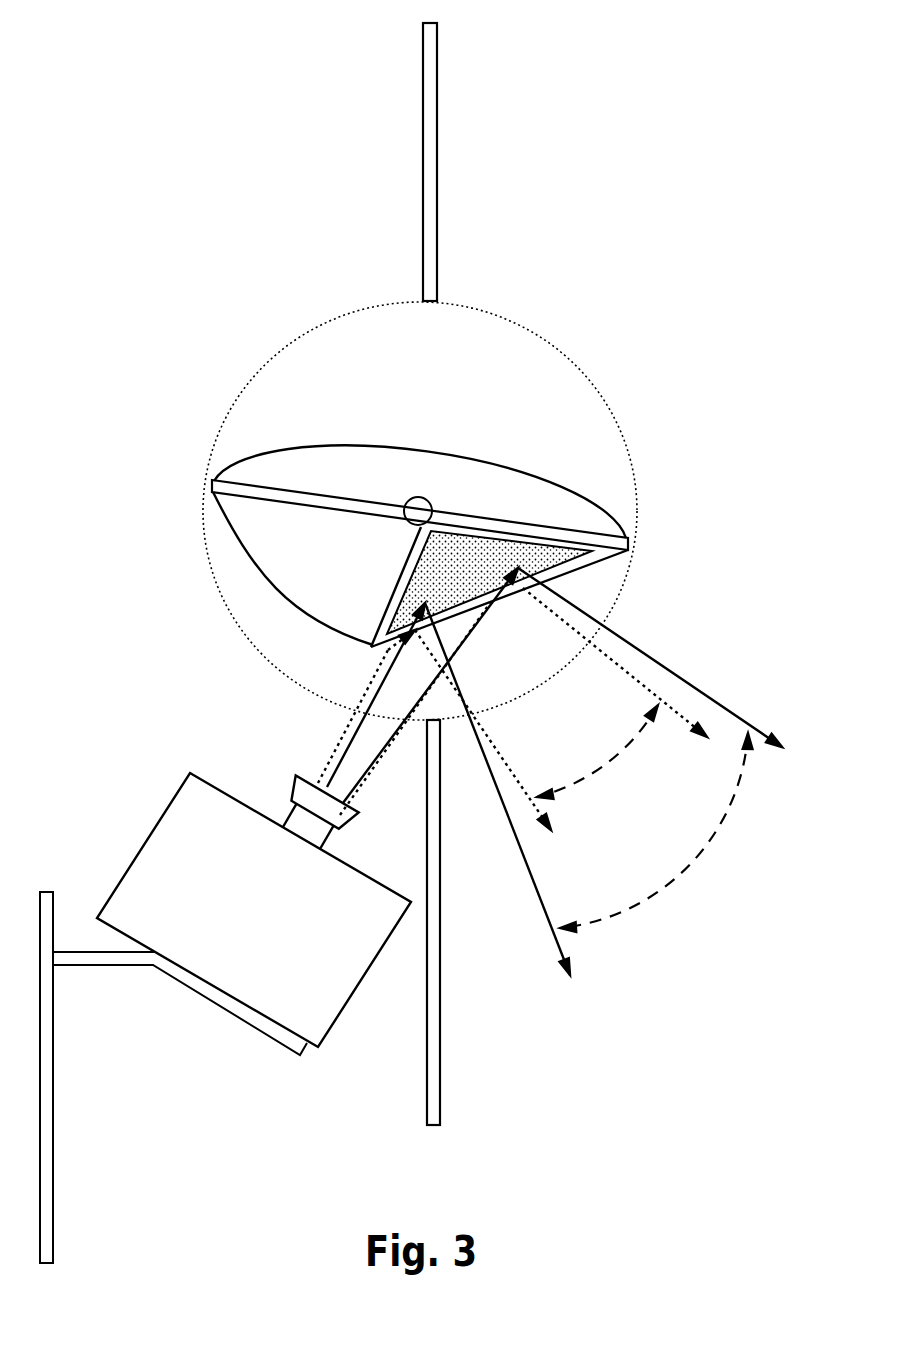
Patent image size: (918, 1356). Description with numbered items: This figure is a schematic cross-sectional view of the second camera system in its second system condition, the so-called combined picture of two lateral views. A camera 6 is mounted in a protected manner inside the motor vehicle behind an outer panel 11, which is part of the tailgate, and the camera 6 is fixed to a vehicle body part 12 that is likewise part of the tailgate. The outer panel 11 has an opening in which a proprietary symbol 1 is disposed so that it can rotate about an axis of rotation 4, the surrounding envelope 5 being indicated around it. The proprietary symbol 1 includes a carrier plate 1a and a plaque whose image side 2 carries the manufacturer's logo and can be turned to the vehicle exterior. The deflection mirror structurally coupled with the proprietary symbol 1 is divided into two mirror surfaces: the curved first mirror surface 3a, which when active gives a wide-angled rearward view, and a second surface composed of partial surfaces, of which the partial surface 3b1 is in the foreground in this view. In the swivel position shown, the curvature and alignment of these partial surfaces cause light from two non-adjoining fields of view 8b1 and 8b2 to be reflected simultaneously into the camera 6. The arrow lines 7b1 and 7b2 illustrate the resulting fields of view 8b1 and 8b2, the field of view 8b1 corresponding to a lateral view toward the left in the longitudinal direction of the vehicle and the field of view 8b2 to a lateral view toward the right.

The proprietary symbol 1 is at (323, 472).
The carrier plate 1a is at (481, 520).
The image side 2 is at (387, 442).
The first mirror surface 3a is at (270, 575).
The partial surface 3b1 is at (547, 557).
The axis of rotation 4 is at (418, 497).
The envelope circle of the rotating disc 5 is at (248, 383).
The camera 6 is at (310, 1008).
The arrow lines 7b1 is at (630, 642).
The arrow lines 7b2 is at (627, 675).
The field of view 8b1 is at (663, 870).
The field of view 8b2 is at (592, 772).
The outer panel 11 is at (432, 150).
The vehicle body part 12 is at (48, 888).